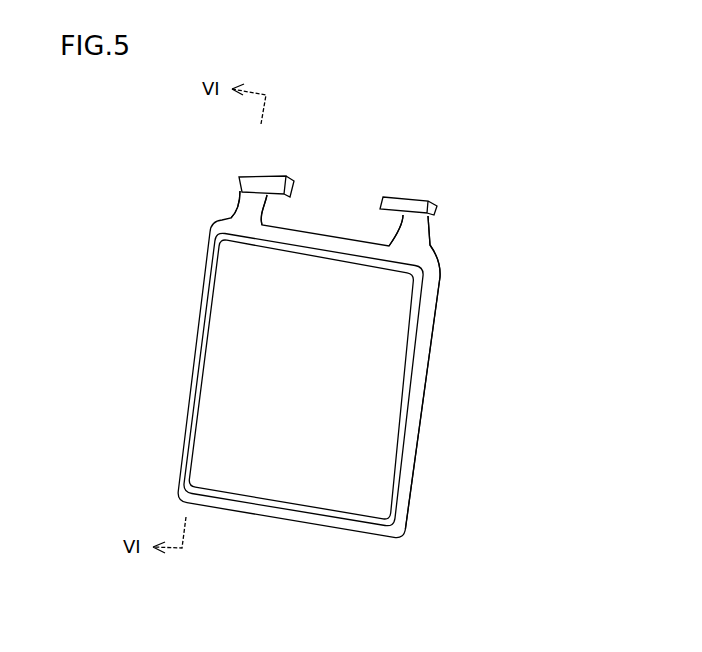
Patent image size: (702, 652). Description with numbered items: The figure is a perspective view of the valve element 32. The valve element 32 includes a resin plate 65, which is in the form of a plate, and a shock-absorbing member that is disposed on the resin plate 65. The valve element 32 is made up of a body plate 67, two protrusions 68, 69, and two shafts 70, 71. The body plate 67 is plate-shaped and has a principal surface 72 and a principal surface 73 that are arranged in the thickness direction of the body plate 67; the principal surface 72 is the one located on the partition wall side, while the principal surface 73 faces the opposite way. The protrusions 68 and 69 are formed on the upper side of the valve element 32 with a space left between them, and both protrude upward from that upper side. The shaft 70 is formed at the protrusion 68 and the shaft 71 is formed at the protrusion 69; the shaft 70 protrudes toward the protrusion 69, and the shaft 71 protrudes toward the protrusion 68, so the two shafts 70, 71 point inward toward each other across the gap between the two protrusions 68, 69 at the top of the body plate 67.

The valve element 32 is at (522, 152).
The resin plate 65 is at (172, 287).
The body plate 67 is at (222, 348).
The protrusion 68 is at (242, 205).
The protrusion 69 is at (423, 232).
The shaft 70 is at (270, 177).
The shaft 71 is at (400, 200).
The principal surface 72 is at (423, 405).
The principal surface 73 is at (213, 408).